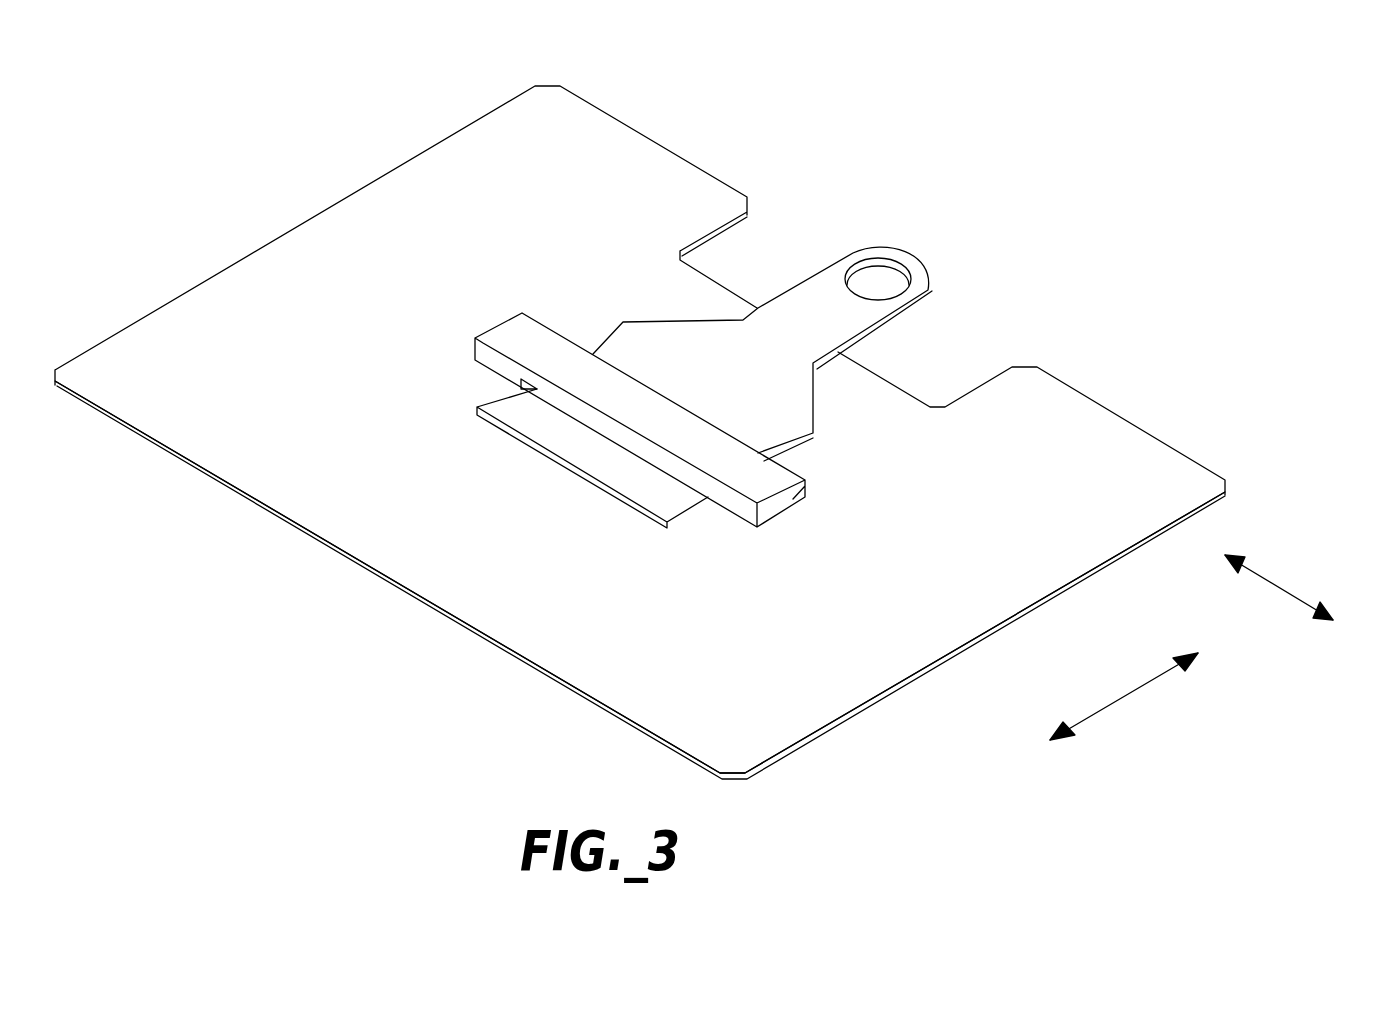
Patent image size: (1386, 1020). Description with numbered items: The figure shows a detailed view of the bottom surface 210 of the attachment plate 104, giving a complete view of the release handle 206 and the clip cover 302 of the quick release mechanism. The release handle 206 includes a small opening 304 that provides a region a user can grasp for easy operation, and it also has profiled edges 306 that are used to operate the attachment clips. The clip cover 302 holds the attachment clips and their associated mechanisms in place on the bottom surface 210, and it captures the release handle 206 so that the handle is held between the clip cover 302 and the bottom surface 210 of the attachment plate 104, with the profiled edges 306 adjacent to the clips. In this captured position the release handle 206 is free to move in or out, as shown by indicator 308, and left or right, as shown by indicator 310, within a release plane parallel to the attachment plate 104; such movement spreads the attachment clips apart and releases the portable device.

The attachment plate 104 is at (925, 670).
The bottom surface 210 is at (750, 659).
The release handle 206 is at (781, 343).
The small opening 304 is at (875, 278).
The clip cover 302 is at (514, 330).
The profiled edges 306 is at (498, 400).
The indicator 308 is at (1118, 700).
The indicator 310 is at (1285, 590).